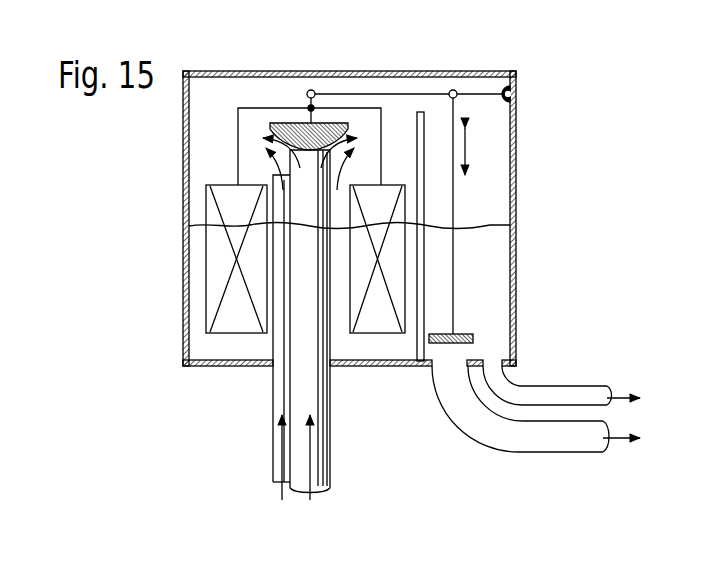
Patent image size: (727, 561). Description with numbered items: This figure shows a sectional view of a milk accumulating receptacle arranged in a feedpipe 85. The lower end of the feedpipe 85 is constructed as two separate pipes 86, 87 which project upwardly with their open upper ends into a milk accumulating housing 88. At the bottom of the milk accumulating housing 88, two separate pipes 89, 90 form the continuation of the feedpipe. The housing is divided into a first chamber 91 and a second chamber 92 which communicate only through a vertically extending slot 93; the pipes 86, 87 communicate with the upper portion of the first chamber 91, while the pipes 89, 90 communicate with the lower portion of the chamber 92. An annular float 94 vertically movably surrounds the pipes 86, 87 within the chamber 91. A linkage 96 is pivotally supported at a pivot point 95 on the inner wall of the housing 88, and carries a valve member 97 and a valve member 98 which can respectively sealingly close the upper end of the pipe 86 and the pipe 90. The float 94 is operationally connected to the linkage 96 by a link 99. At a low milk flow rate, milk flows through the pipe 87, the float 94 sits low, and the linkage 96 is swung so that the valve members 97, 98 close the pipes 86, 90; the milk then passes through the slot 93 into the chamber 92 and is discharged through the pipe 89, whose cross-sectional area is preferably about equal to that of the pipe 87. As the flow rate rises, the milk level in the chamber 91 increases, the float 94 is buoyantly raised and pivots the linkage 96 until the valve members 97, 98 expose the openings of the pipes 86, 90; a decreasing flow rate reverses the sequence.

The feedpipe 85 is at (336, 420).
The pipe 86 is at (318, 458).
The pipe 87 is at (277, 455).
The milk accumulating housing 88 is at (220, 100).
The pipe 89 is at (553, 400).
The pipe 90 is at (543, 438).
The first chamber 91 is at (403, 132).
The chamber 92 is at (475, 202).
The slot 93 is at (422, 140).
The annular float 94 is at (217, 275).
The pivot point 95 is at (517, 93).
The linkage 96 is at (400, 92).
The valve member 97 is at (298, 133).
The valve member 98 is at (473, 338).
The link 99 is at (337, 110).